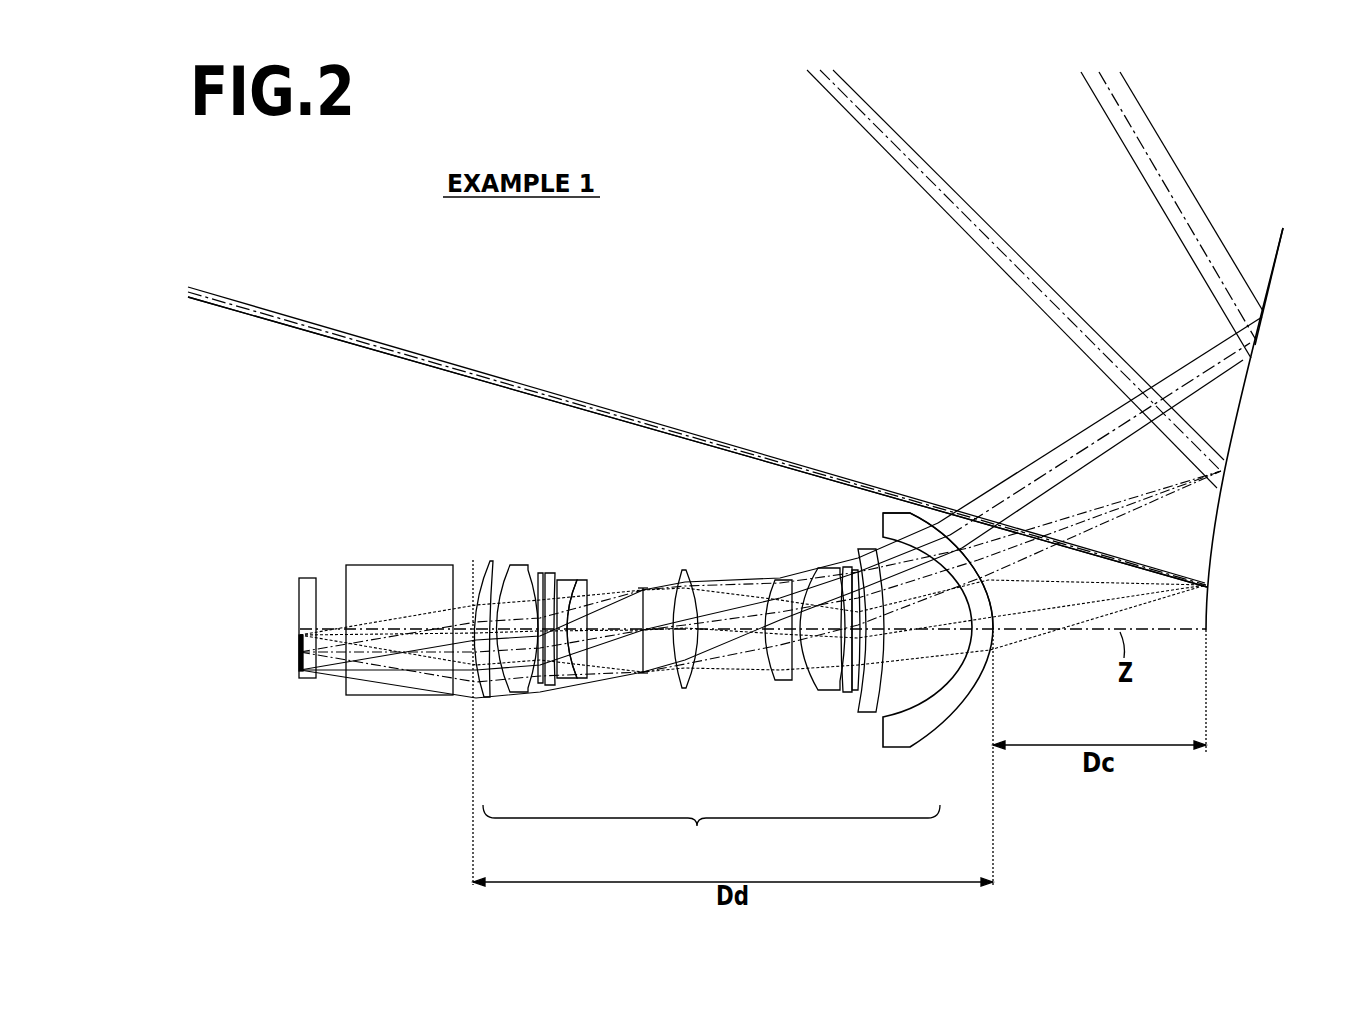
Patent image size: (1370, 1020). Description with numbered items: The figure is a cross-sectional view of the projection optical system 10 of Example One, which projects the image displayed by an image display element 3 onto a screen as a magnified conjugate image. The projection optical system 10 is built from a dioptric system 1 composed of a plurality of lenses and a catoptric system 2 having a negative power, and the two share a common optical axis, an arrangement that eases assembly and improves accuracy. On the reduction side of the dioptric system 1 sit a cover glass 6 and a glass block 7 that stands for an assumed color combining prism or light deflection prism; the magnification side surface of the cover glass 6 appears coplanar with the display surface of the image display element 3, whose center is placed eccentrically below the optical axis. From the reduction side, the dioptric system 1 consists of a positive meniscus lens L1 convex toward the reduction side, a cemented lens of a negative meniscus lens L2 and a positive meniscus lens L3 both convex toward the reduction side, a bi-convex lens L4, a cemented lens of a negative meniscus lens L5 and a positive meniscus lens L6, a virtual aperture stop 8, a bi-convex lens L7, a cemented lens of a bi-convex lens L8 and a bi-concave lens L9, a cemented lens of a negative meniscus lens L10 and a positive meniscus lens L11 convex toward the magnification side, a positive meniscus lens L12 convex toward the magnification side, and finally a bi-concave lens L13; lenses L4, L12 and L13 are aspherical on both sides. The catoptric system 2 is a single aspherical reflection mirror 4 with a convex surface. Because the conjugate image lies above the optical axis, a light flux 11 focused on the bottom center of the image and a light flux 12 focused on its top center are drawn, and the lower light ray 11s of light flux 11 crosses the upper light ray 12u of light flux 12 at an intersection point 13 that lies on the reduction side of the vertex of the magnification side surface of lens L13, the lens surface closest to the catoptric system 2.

The dioptric system 1 is at (711, 829).
The catoptric system 2 is at (1255, 392).
The image display element 3 is at (298, 646).
The reflection mirror 4 is at (1281, 266).
The cover glass 6 is at (308, 681).
The glass block 7 is at (385, 697).
The aperture stop 8 is at (638, 681).
The projection optical system 10 is at (357, 491).
The light flux 11 is at (611, 409).
The lower light ray 11s is at (721, 452).
The light flux 12 is at (1169, 170).
The upper light ray 12u is at (1060, 441).
The intersection point 13 is at (942, 516).
The positive meniscus lens L1 is at (497, 700).
The negative meniscus lens L2 is at (514, 694).
The positive meniscus lens L3 is at (541, 685).
The bi-convex lens L4 is at (550, 687).
The negative meniscus lens L5 is at (566, 680).
The positive meniscus lens L6 is at (582, 680).
The bi-convex lens L7 is at (686, 691).
The bi-convex lens L8 is at (781, 683).
The bi-concave lens L9 is at (824, 693).
The negative meniscus lens L10 is at (846, 695).
The positive meniscus lens L11 is at (856, 694).
The positive meniscus lens L12 is at (866, 715).
The bi-concave lens L13 is at (900, 748).